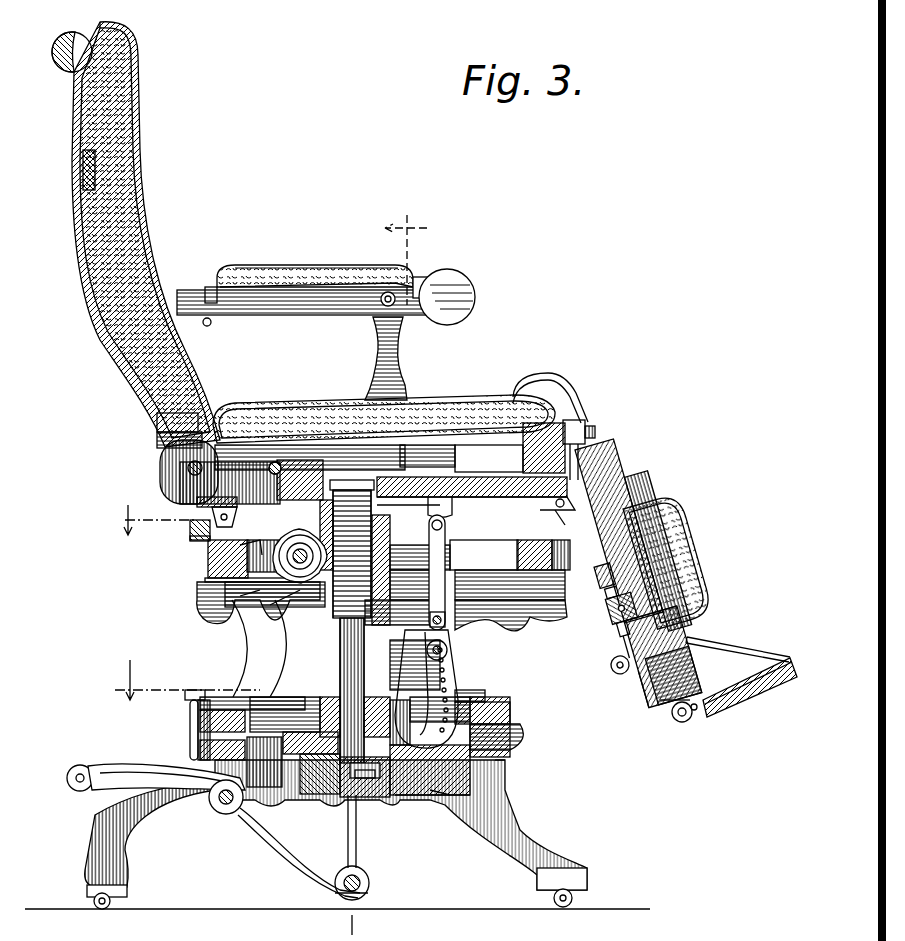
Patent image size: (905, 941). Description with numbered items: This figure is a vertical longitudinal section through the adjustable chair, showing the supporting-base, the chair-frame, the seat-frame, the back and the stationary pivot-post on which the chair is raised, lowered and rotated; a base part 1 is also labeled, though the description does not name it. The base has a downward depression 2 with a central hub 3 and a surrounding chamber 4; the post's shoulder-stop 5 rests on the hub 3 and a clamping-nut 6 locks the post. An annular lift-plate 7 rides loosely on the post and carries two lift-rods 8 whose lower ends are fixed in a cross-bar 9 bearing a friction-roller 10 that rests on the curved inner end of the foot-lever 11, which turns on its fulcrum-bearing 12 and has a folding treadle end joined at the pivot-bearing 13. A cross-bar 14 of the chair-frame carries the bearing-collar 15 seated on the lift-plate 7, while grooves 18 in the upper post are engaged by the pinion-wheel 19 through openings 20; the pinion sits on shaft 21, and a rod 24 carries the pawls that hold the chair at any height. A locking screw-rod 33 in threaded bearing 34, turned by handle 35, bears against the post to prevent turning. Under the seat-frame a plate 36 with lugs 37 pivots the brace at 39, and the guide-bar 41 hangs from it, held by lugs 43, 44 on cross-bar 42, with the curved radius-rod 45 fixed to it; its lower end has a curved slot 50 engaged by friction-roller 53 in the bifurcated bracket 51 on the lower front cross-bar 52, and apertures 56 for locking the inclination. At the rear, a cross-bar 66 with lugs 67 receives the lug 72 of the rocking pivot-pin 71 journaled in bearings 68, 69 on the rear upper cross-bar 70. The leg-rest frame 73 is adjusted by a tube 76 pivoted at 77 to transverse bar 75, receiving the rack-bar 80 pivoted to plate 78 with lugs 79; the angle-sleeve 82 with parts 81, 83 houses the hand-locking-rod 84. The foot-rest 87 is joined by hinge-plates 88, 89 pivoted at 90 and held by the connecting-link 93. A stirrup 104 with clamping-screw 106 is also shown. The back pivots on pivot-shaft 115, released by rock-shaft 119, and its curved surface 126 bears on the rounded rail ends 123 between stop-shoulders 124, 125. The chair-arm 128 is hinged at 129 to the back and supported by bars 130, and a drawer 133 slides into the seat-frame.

The base block 1 is at (305, 742).
The downward extension or depression 2 is at (440, 780).
The central raised hub 3 is at (315, 768).
The recess or chamber 4 is at (406, 242).
The shoulder-stop 5 is at (180, 682).
The clamping-nut 6 is at (350, 790).
The annular lift-plate 7 is at (150, 520).
The lift-rods 8 is at (356, 848).
The cross-bar 9 is at (358, 888).
The friction-roller 10 is at (360, 880).
The lifting or foot-lever 11 is at (110, 793).
The fulcrum-bearing 12 is at (222, 805).
The pivot-bearing 13 is at (72, 778).
The cross-bar 14 is at (190, 716).
The bearing-collar 15 is at (340, 660).
The annular grooves 18 is at (290, 488).
The pinion-wheel 19 is at (302, 545).
The openings 20 is at (330, 575).
The shaft 21 is at (277, 604).
The rod 24 is at (241, 593).
The locking screw-rod 33 is at (276, 666).
The threaded bearing 34 is at (233, 695).
The handle 35 is at (192, 742).
The plate 36 is at (420, 498).
The lugs 37 is at (450, 508).
The pivot 39 is at (478, 572).
The guide-bar 41 is at (460, 600).
The cross-bar 42 is at (420, 527).
The guide-lug 43 is at (437, 572).
The guide-lug 44 is at (400, 620).
The curved radius-rod 45 is at (409, 591).
The curved slot 50 is at (500, 735).
The bifurcated guide-bracket 51 is at (470, 695).
The lower front cross-bar 52 is at (490, 720).
The friction-roller 53 is at (455, 655).
The apertures 56 is at (511, 616).
The cross-bar 66 is at (212, 512).
The lugs 67 is at (283, 540).
The pivot-bearing 68 is at (190, 532).
The pivot-bearing 69 is at (245, 548).
The rear upper cross-bar 70 is at (228, 557).
The rocking pivot-pin 71 is at (206, 547).
The lug 72 is at (210, 540).
The leg-rest frame 73 is at (612, 500).
The transverse bar 75 is at (555, 505).
The tube 76 is at (581, 578).
The pivot 77 is at (547, 526).
The plate 78 is at (673, 675).
The lugs 79 is at (650, 680).
The rack-bar 80 is at (625, 670).
The part of angle-sleeve 81 is at (588, 599).
The angle-sleeve 82 is at (600, 620).
The part of angle-sleeve 83 is at (660, 585).
The hand-locking-rod 84 is at (610, 640).
The foot-rest 87 is at (760, 700).
The hinge-plates 88 is at (685, 700).
The hinge-plates 89 is at (694, 712).
The pivot 90 is at (678, 722).
The adjustable connecting-link 93 is at (745, 660).
The stirrup 104 is at (520, 385).
The clamping-screws 106 is at (590, 432).
The pivot-shaft 115 is at (275, 384).
The rock-shaft 119 is at (280, 468).
The rounded rear ends of side-rails 123 is at (165, 480).
The stop-shoulder 124 is at (160, 440).
The stop-shoulder 125 is at (262, 478).
The curved bearing surface 126 is at (165, 462).
The chair-arm 128 is at (325, 302).
The hinge 129 is at (210, 323).
The bars 130 is at (400, 340).
The drawer 133 is at (482, 449).